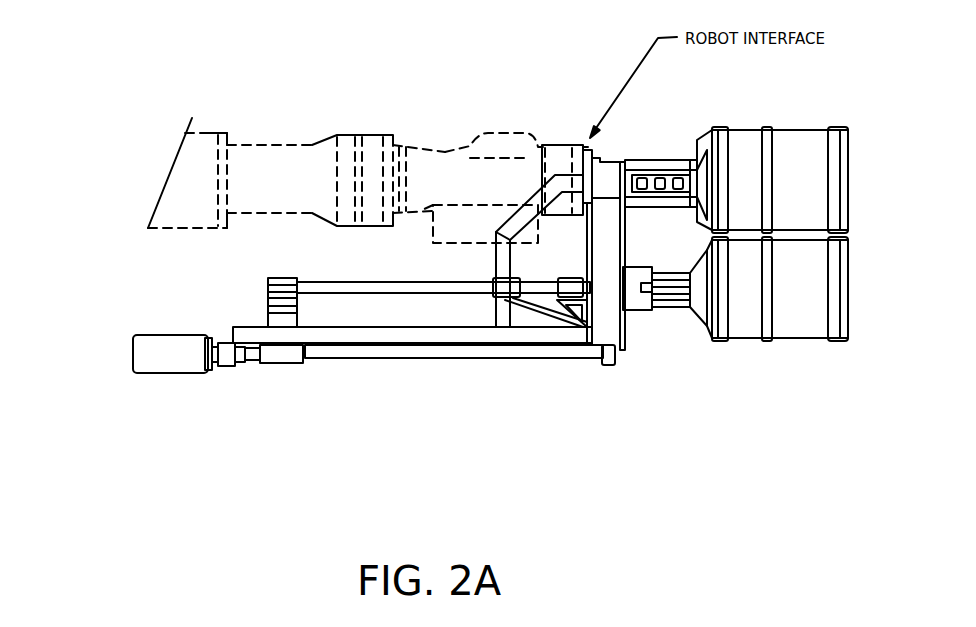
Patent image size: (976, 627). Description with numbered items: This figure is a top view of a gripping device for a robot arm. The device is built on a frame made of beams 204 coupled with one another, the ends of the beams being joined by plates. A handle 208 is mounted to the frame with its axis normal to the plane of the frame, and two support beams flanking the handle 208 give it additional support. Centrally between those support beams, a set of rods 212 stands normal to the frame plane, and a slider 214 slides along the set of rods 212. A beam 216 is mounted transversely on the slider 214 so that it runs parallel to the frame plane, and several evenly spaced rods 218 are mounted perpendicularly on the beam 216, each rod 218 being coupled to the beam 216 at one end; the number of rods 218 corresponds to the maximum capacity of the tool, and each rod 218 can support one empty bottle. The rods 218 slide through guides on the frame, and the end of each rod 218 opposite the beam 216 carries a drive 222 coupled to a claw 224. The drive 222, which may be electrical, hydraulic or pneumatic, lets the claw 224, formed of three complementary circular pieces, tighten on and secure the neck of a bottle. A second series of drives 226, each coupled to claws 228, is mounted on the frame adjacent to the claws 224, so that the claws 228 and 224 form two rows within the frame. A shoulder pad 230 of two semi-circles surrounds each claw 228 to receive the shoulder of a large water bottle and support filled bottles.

The beam 204 is at (620, 343).
The handle 208 is at (160, 389).
The set of rods 212 is at (555, 358).
The slider 214 is at (280, 365).
The beam 216 is at (268, 302).
The rods 218 is at (377, 293).
The drive 222 is at (647, 330).
The claw 224 is at (690, 330).
The second series of drives 226 is at (640, 160).
The claws 228 is at (667, 160).
The shoulder pad 230 is at (703, 127).